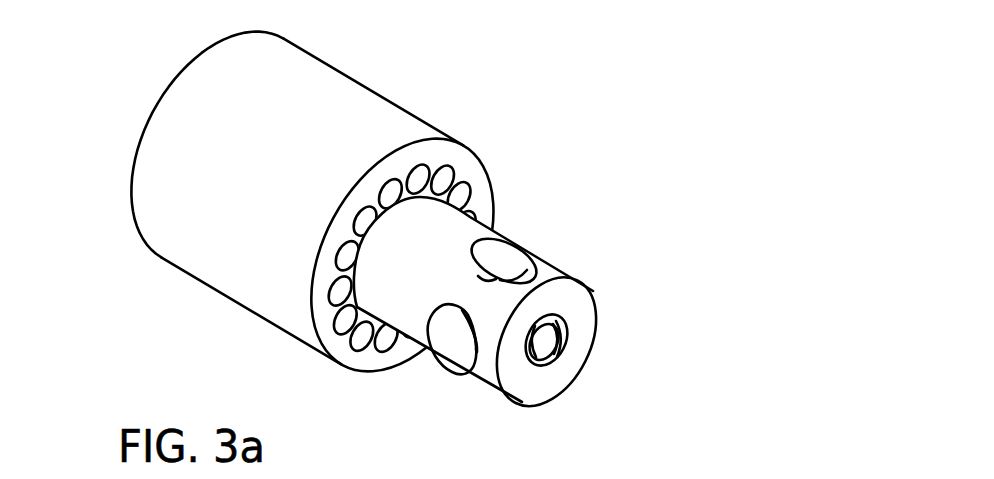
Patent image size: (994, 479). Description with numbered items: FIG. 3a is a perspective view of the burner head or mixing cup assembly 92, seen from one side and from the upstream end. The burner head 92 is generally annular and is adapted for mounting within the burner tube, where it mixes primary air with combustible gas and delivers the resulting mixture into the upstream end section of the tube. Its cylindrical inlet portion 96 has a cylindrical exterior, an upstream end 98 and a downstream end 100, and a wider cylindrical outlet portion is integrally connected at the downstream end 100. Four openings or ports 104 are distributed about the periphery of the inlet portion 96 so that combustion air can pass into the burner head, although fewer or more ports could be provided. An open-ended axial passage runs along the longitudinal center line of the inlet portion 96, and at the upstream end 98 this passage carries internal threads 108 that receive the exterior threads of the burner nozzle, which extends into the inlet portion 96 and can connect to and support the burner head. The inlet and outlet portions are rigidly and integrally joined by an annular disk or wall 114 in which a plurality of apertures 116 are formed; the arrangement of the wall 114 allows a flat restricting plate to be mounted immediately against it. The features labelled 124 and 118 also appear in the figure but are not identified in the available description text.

The burner head or mixing cup assembly 92 is at (402, 48).
The large cylindrical body 124 is at (173, 88).
The annular front face 118 is at (313, 270).
The apertures 116 is at (443, 172).
The downstream end 100 is at (463, 193).
The annular disk or wall 114 is at (375, 350).
The cylindrical inlet portion 96 is at (448, 242).
The upstream end 98 is at (570, 305).
The internal threads 108 is at (547, 335).
The openings or ports 104 is at (497, 260).